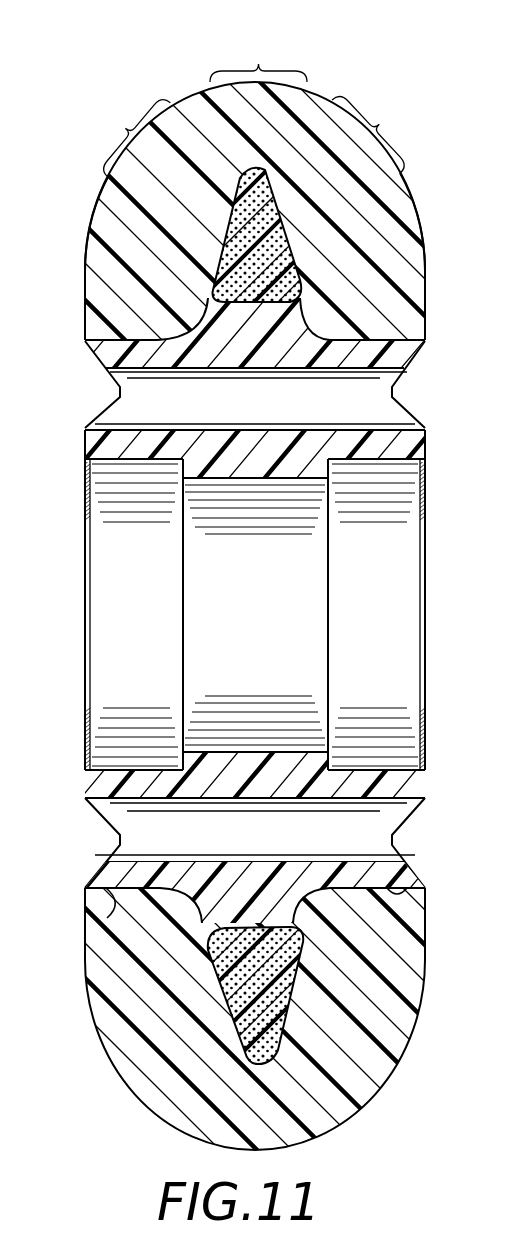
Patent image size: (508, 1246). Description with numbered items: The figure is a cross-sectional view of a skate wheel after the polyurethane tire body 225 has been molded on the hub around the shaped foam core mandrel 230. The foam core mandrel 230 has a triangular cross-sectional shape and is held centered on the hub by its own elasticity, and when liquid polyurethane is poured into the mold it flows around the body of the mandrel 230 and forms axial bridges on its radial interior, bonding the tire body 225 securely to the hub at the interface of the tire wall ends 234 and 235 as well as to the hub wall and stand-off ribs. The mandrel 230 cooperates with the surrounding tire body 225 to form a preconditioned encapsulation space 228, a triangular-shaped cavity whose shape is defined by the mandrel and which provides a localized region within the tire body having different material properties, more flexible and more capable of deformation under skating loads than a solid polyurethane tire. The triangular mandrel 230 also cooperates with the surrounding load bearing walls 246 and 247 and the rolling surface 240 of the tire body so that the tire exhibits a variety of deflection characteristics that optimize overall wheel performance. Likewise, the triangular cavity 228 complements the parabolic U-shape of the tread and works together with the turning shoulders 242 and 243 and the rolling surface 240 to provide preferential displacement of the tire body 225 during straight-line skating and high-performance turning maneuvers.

The polyurethane tire body 225 is at (190, 90).
The encapsulation space 228 is at (222, 228).
The foam core mandrel 230 is at (300, 230).
The tire wall end 234 is at (408, 893).
The tire wall end 235 is at (107, 918).
The rolling surface 240 is at (258, 56).
The turning shoulder 242 is at (385, 130).
The turning shoulder 243 is at (120, 134).
The load bearing wall 246 is at (430, 263).
The load bearing wall 247 is at (76, 270).